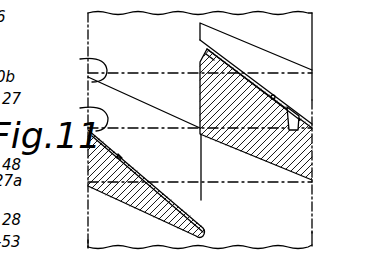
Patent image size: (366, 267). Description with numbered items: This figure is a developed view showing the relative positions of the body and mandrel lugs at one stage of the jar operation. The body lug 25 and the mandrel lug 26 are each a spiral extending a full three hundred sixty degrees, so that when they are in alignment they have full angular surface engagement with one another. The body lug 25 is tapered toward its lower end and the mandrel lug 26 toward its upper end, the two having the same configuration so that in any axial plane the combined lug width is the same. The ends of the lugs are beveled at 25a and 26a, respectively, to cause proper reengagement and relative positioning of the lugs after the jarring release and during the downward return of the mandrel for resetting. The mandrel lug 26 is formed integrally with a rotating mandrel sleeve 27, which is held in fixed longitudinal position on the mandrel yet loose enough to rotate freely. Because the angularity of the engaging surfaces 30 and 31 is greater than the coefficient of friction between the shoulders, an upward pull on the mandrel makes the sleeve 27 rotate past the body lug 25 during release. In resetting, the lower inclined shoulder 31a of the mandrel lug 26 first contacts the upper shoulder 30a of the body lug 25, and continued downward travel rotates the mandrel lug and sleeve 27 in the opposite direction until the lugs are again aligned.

The body lug 25 is at (304, 147).
The bevel of body lug 25a is at (206, 54).
The mandrel lug 26 is at (299, 103).
The bevel of mandrel lug 26a is at (203, 196).
The rotating mandrel sleeve 27 is at (292, 218).
The engaging surface of body lug 30 is at (298, 186).
The upper shoulder of body lug 30a is at (300, 121).
The engaging surface of mandrel lug 31 is at (289, 58).
The lower inclined shoulder of mandrel lug 31a is at (275, 96).